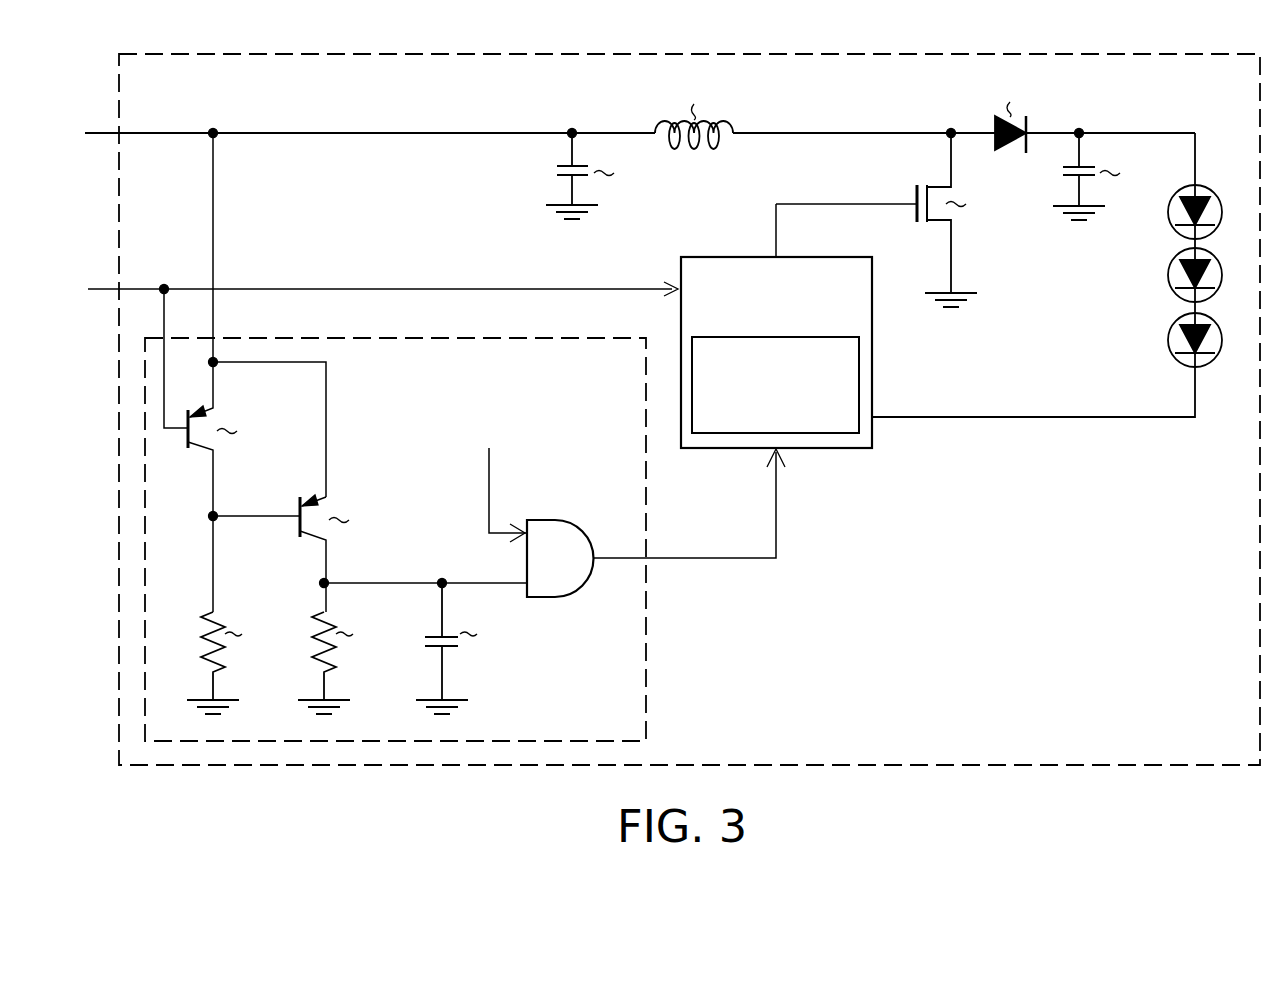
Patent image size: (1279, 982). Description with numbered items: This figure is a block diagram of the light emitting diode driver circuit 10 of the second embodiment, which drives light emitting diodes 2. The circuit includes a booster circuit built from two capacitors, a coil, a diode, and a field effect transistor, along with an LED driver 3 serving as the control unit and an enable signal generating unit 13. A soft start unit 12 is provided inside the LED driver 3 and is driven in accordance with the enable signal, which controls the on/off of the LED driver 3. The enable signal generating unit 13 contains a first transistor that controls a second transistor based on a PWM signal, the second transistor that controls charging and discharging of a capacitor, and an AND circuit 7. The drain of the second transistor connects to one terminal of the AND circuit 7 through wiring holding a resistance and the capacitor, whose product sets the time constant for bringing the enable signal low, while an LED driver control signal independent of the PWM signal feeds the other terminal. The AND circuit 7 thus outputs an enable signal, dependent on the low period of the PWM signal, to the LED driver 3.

The light emitting diode driver circuit 10 is at (1226, 53).
The light emitting diodes 2 is at (1217, 186).
The LED driver 3 is at (847, 257).
The soft start unit 12 is at (817, 337).
The enable signal generating unit 13 is at (605, 338).
The AND circuit 7 is at (580, 522).